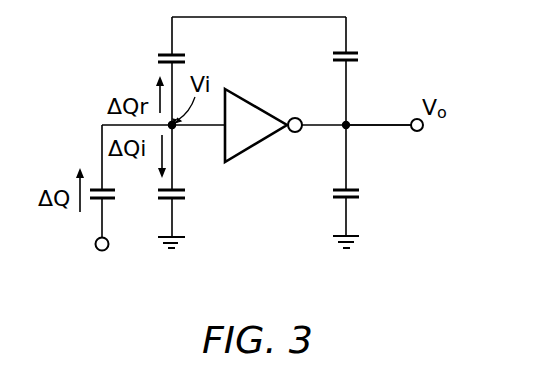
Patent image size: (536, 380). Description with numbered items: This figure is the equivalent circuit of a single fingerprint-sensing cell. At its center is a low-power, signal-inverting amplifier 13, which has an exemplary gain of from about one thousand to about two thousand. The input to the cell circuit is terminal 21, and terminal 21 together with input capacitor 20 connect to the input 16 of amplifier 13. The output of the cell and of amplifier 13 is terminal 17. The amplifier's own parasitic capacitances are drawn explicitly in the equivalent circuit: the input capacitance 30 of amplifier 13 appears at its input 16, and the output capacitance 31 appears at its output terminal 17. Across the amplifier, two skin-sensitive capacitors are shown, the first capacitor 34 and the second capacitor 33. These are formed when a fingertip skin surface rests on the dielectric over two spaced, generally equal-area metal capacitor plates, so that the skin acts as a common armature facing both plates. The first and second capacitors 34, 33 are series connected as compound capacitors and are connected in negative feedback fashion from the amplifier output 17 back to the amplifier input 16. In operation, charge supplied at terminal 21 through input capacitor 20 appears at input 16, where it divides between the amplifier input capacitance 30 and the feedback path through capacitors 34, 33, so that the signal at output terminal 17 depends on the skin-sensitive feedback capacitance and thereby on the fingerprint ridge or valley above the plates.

The amplifier 13 is at (252, 102).
The input 16 is at (175, 129).
The terminal 17 is at (383, 127).
The input capacitor 20 is at (108, 200).
The terminal 21 is at (95, 245).
The input capacitance 30 is at (180, 200).
The output capacitance 31 is at (354, 199).
The second capacitor 33 is at (352, 53).
The first capacitor 34 is at (165, 54).